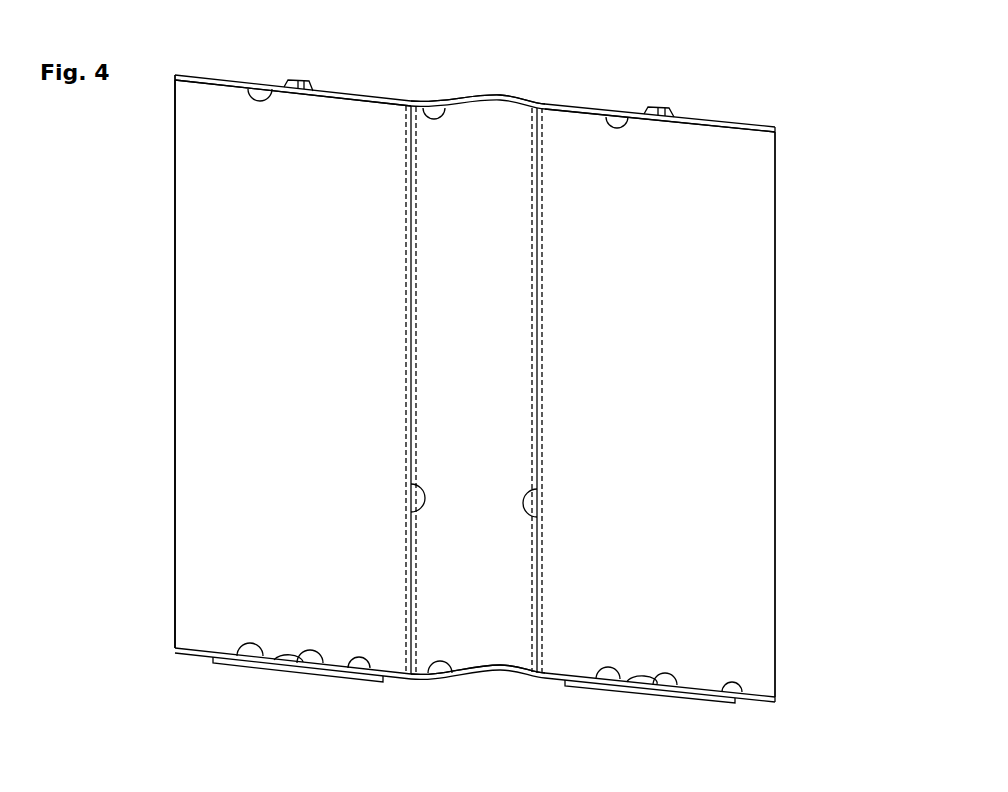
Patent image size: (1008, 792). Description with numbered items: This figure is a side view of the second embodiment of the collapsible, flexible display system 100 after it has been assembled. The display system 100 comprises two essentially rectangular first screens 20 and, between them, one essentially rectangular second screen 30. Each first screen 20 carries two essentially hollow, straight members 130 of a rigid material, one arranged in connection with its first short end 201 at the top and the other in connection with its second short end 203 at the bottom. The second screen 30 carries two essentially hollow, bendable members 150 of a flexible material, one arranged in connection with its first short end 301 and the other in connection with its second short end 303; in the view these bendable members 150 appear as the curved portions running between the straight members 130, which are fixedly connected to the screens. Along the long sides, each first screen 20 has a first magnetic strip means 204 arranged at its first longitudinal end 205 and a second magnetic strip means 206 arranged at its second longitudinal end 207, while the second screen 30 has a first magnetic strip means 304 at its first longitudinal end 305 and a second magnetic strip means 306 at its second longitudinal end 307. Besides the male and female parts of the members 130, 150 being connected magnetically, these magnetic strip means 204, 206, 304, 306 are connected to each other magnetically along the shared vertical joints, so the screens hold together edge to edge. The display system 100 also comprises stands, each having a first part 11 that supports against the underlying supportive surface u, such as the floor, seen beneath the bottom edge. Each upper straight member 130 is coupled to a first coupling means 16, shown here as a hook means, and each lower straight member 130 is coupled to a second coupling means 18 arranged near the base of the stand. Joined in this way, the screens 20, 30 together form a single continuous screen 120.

The display system 100 is at (797, 168).
The continuous screen 120 is at (152, 212).
The first screen 20 is at (303, 195).
The second screen 30 is at (496, 188).
The straight member 130 is at (364, 96).
The first short end 201 is at (257, 86).
The first coupling means 16 is at (294, 82).
The first short end 301 is at (427, 103).
The bendable member 150 is at (489, 95).
The second longitudinal end 207 is at (410, 284).
The first longitudinal end 205 is at (175, 305).
The first longitudinal end 305 is at (410, 374).
The second magnetic strip means 206 is at (410, 440).
The first magnetic strip means 304 is at (410, 510).
The second longitudinal end 307 is at (538, 374).
The first magnetic strip means 204 is at (542, 448).
The second magnetic strip means 306 is at (538, 523).
The underlying supportive surface u is at (205, 656).
The second short end 203 is at (240, 657).
The second coupling means 18 is at (313, 677).
The first part 11 is at (378, 681).
The second short end 303 is at (433, 681).